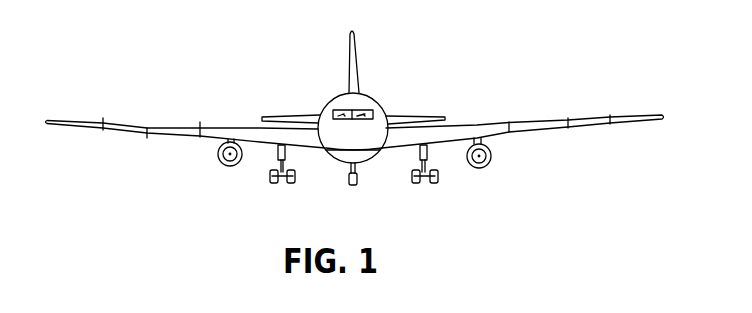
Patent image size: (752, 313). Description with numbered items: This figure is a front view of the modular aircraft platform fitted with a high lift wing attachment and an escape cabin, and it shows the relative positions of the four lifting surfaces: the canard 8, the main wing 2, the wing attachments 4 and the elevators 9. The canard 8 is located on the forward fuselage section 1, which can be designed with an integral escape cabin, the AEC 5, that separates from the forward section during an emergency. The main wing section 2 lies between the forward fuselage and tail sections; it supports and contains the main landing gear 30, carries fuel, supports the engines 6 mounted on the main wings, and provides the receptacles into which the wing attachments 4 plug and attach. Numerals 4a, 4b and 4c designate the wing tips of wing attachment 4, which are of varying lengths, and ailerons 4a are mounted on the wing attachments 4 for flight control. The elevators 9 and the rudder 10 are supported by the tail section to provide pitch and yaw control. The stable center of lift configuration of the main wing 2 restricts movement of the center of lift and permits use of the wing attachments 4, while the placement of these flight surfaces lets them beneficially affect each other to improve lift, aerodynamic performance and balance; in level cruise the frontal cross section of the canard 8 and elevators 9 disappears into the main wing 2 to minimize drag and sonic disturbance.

The forward fuselage section 1 is at (347, 158).
The main wing section 2 is at (455, 132).
The wing attachments 4 is at (598, 118).
The wing tip / aileron 4a is at (104, 122).
The wing tip 4b is at (212, 106).
The wing tip 4c is at (147, 137).
The AEC (escape cabin) 5 is at (328, 135).
The engines 6 is at (484, 156).
The canard 8 is at (393, 150).
The elevators 9 is at (412, 118).
The rudder 10 is at (357, 60).
The main landing gear 30 is at (438, 181).